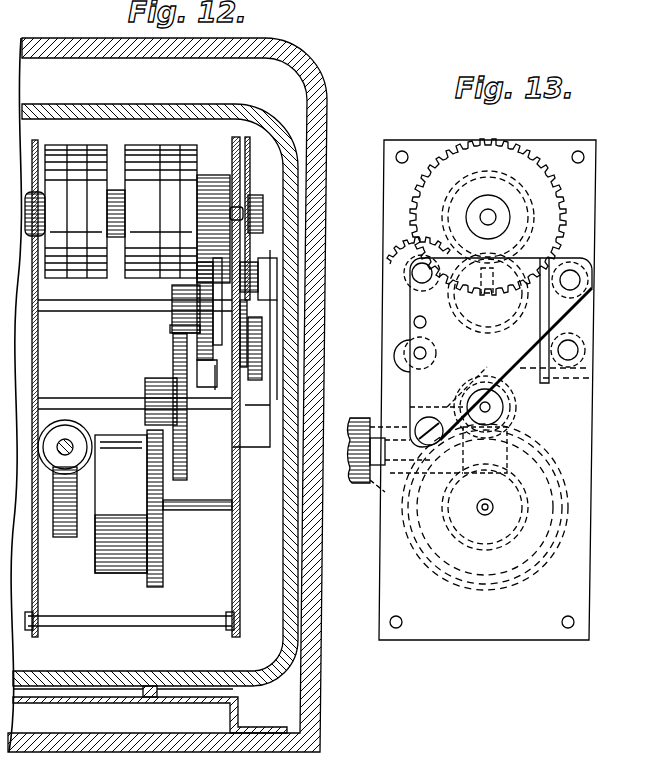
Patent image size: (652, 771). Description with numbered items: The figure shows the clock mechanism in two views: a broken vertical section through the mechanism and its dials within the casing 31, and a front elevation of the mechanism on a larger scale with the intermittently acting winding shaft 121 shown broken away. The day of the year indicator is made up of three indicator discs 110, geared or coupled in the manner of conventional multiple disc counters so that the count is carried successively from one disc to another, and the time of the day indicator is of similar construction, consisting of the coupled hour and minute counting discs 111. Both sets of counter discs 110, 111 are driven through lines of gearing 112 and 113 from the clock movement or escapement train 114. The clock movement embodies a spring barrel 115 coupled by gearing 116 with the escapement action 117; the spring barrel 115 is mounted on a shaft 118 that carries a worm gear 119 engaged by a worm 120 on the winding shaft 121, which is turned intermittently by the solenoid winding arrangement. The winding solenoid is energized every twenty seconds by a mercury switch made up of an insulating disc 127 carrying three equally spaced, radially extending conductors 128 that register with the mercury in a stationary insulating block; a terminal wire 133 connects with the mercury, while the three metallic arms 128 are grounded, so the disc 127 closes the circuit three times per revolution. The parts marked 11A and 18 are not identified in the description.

In FIG. 12, the casing 31 is at (318, 66).
In FIG. 12, the clock movement or escapement train 114 is at (268, 263).
In FIG. 12, the shaft 118 is at (188, 511).
In FIG. 12, the indicator discs 110 is at (97, 146).
In FIG. 12, the hour and minute counting discs 111 is at (185, 146).
In FIG. 12, the gearing 112 is at (214, 175).
In FIG. 13, the gearing 112 is at (532, 210).
In FIG. 12, the gearing 113 is at (248, 173).
In FIG. 13, the gearing 113 is at (503, 122).
In FIG. 12, the insulating disc 127 is at (172, 288).
In FIG. 13, the insulating disc 127 is at (520, 259).
In FIG. 12, the conductors 128 is at (172, 323).
In FIG. 13, the conductors 128 is at (501, 258).
In FIG. 12, the terminal wire 133 is at (202, 375).
In FIG. 13, the terminal wire 133 is at (553, 379).
In FIG. 12, the escapement action 117 is at (255, 338).
In FIG. 13, the escapement action 117 is at (394, 356).
In FIG. 12, the worm 120 is at (72, 432).
In FIG. 13, the worm 120 is at (500, 436).
In FIG. 12, the shaft 121 is at (63, 440).
In FIG. 13, the shaft 121 is at (385, 474).
In FIG. 12, the worm gear 119 is at (63, 538).
In FIG. 13, the worm gear 119 is at (516, 530).
In FIG. 12, the spring barrel 115 is at (121, 504).
In FIG. 12, the gearing 116 is at (165, 581).
In FIG. 13, the gearing 116 is at (492, 586).
In FIG. 13, the bracket 11A is at (400, 303).
In FIG. 13, the pin 18 is at (493, 506).